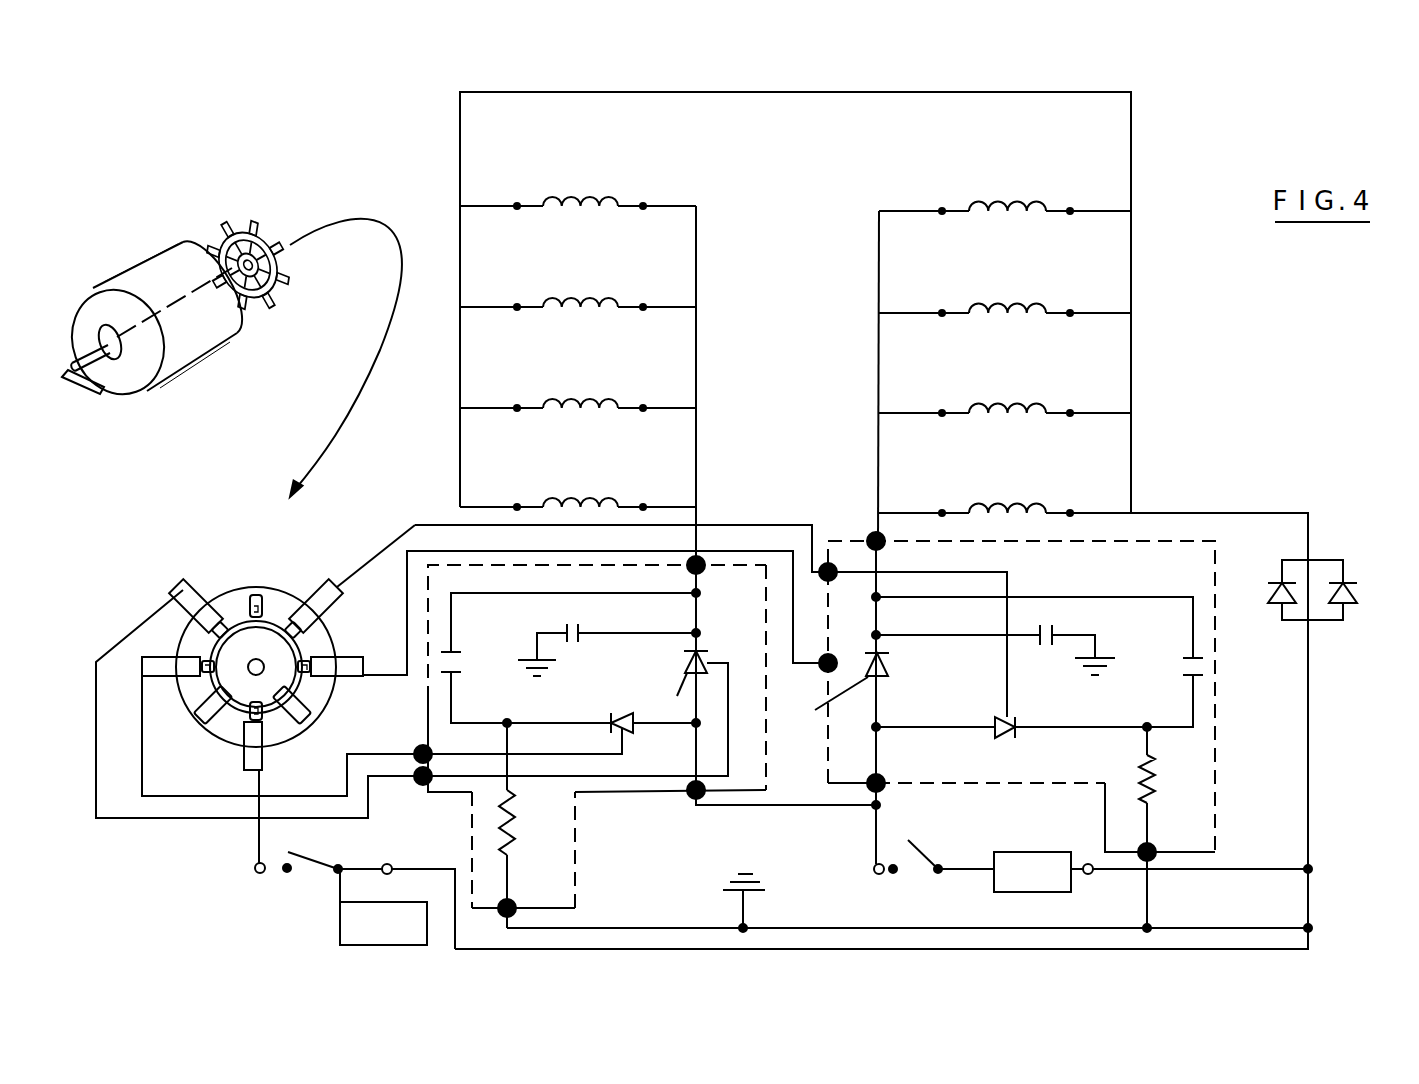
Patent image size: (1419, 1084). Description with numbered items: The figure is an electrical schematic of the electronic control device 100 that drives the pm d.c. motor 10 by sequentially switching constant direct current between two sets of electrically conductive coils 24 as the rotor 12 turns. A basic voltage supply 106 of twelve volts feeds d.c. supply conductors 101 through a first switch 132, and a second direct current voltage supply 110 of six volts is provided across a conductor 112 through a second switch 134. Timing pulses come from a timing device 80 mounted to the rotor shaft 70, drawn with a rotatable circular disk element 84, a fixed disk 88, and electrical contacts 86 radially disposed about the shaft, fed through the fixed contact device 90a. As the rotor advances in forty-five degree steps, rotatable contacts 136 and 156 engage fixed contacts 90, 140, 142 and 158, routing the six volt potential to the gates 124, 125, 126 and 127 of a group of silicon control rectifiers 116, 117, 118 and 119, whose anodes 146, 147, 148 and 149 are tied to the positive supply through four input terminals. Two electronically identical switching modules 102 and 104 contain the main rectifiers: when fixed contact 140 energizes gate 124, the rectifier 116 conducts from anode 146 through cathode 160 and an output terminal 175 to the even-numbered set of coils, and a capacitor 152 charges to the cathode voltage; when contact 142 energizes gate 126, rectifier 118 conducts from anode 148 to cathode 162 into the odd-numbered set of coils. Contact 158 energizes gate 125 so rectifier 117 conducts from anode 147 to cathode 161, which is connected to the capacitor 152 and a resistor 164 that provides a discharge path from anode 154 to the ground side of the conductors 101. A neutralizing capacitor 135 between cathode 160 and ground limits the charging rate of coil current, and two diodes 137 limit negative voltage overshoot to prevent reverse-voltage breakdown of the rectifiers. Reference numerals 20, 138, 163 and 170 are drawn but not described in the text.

The pm d.c. motor 10 is at (126, 230).
The rotor 12 is at (134, 363).
The motor shaft 20 is at (193, 297).
The rotor shaft 70 is at (65, 380).
The timing device 80 is at (290, 268).
The circular disk element 84 is at (250, 232).
The electrical contacts 86 is at (250, 613).
The fixed disk 88 is at (238, 233).
The electrical contact 90 is at (323, 339).
The fixed contact device 90a is at (252, 768).
The electronic control device 100 is at (430, 146).
The electrically conductive coils 24 is at (722, 205).
The d.c. supply conductors 101 is at (1093, 867).
The switching module 102 is at (742, 562).
The switching module 104 is at (1170, 540).
The basic voltage supply 106 is at (1040, 895).
The second direct current voltage supply 110 is at (340, 933).
The conductor 112 is at (328, 846).
The silicon control rectifier 116 is at (683, 666).
The silicon control rectifier 117 is at (617, 714).
The silicon control rectifier 118 is at (891, 654).
The silicon control rectifier 119 is at (996, 732).
The gate 124 is at (704, 661).
The gate 125 is at (623, 734).
The gate 126 is at (823, 701).
The gate 127 is at (1004, 718).
The switch 132 is at (912, 842).
The switch 134 is at (262, 878).
The neutralizing capacitor 135 is at (581, 628).
The contact 136 is at (290, 722).
The diodes 137 is at (1292, 569).
The center contact 138 is at (257, 659).
The fixed contact 140 is at (180, 593).
The fixed contact 142 is at (345, 672).
The anode 146 is at (665, 699).
The anode 147 is at (634, 727).
The anode 148 is at (881, 677).
The anode 149 is at (993, 720).
The capacitor 152 is at (478, 674).
The anode 154 is at (452, 676).
The contact 156 is at (222, 632).
The contact 158 is at (157, 670).
The cathode 160 is at (699, 652).
The cathode 161 is at (608, 722).
The cathode 162 is at (871, 651).
The cathode of diode 127 163 is at (1017, 729).
The resistor 164 is at (527, 825).
The capacitor C1 170 is at (453, 649).
The output terminal 175 is at (699, 562).